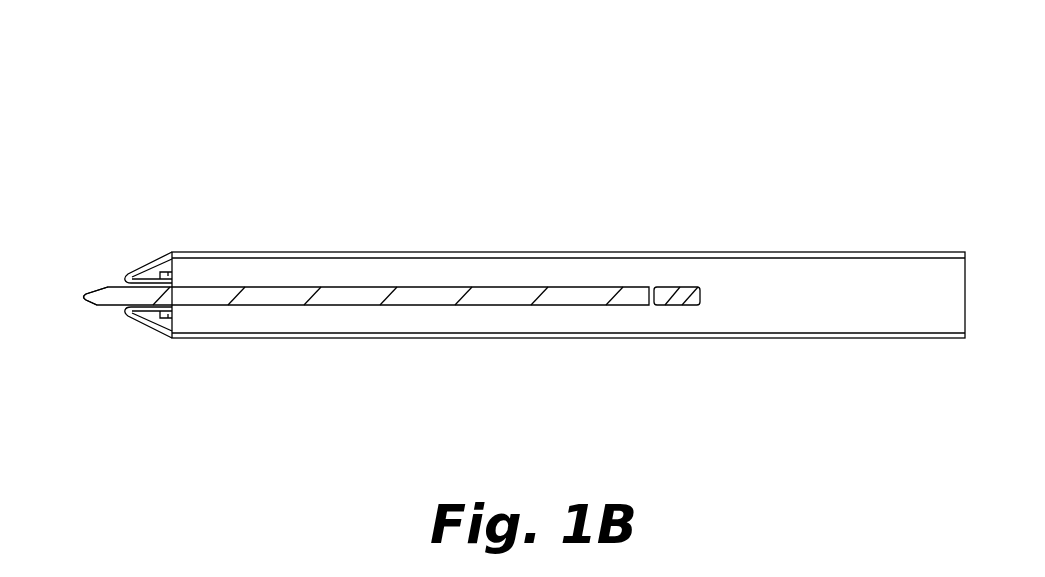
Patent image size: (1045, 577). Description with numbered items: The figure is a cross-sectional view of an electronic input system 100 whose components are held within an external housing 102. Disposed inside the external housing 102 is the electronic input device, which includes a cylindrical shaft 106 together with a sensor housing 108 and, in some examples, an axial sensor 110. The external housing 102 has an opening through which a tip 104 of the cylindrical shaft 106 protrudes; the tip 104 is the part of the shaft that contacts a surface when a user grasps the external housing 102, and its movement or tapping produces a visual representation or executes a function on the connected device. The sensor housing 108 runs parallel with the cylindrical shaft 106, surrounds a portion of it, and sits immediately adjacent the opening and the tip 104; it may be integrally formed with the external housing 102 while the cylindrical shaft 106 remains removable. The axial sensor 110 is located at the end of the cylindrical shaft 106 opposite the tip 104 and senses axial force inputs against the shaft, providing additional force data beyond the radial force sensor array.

The electronic input system 100 is at (403, 100).
The external housing 102 is at (697, 252).
The tip 104 is at (108, 292).
The cylindrical shaft 106 is at (503, 293).
The sensor housing 108 is at (150, 273).
The axial sensor 110 is at (672, 302).